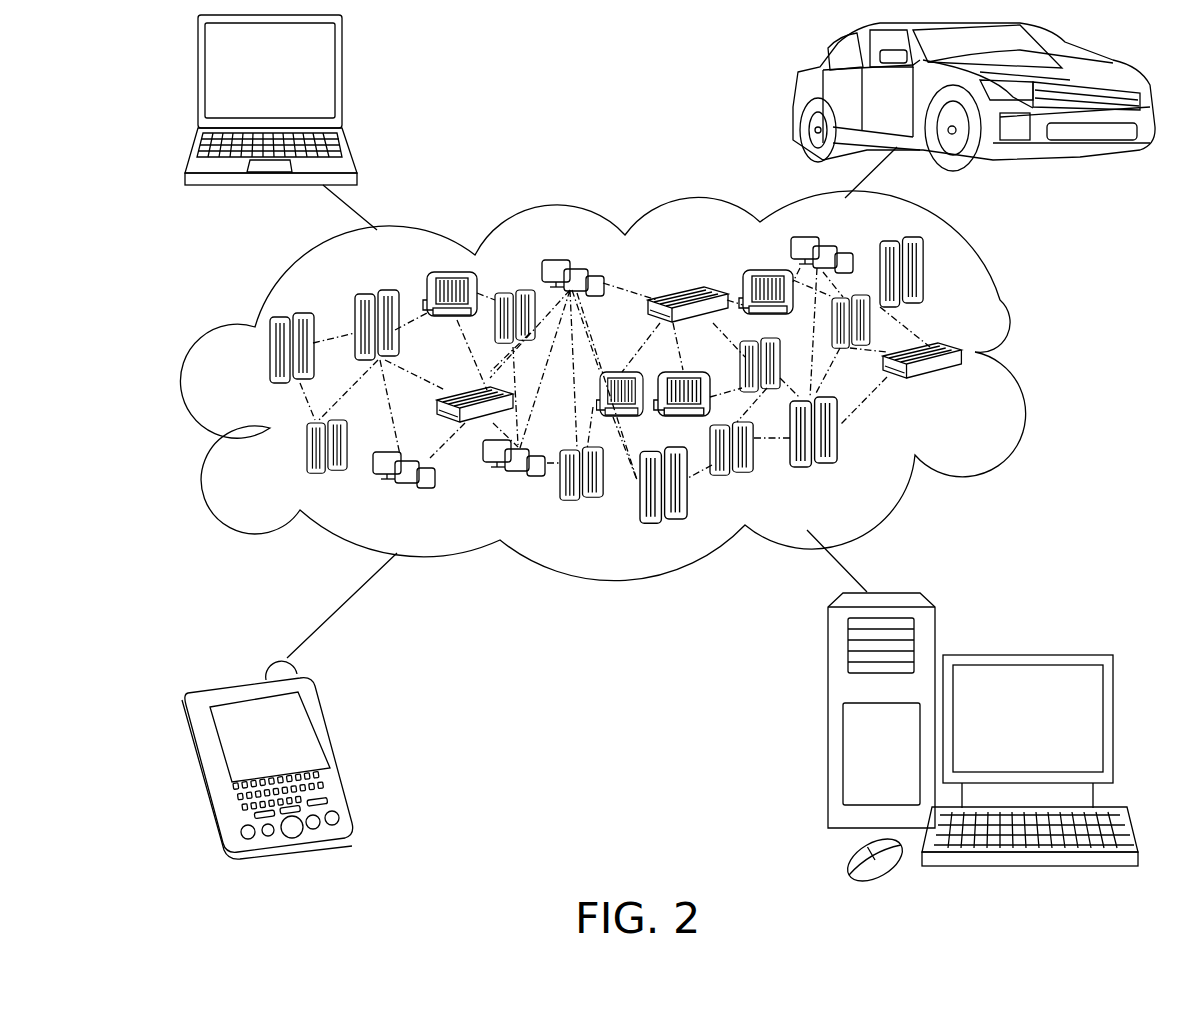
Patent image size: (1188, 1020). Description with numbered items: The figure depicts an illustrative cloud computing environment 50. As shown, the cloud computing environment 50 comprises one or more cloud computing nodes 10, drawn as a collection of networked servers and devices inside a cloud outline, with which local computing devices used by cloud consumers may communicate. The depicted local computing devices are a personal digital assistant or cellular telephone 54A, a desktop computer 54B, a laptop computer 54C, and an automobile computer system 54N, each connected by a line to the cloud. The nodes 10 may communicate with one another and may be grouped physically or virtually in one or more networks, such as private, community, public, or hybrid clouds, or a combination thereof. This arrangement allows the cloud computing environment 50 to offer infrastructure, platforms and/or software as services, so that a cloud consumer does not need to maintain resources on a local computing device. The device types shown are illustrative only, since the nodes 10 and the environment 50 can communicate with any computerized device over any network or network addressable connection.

The cloud computing environment 50 is at (632, 386).
The cloud computing node 10 is at (965, 388).
The personal digital assistant or cellular telephone 54A is at (330, 752).
The desktop computer 54B is at (1027, 655).
The laptop computer 54C is at (343, 81).
The automobile computer system 54N is at (800, 100).